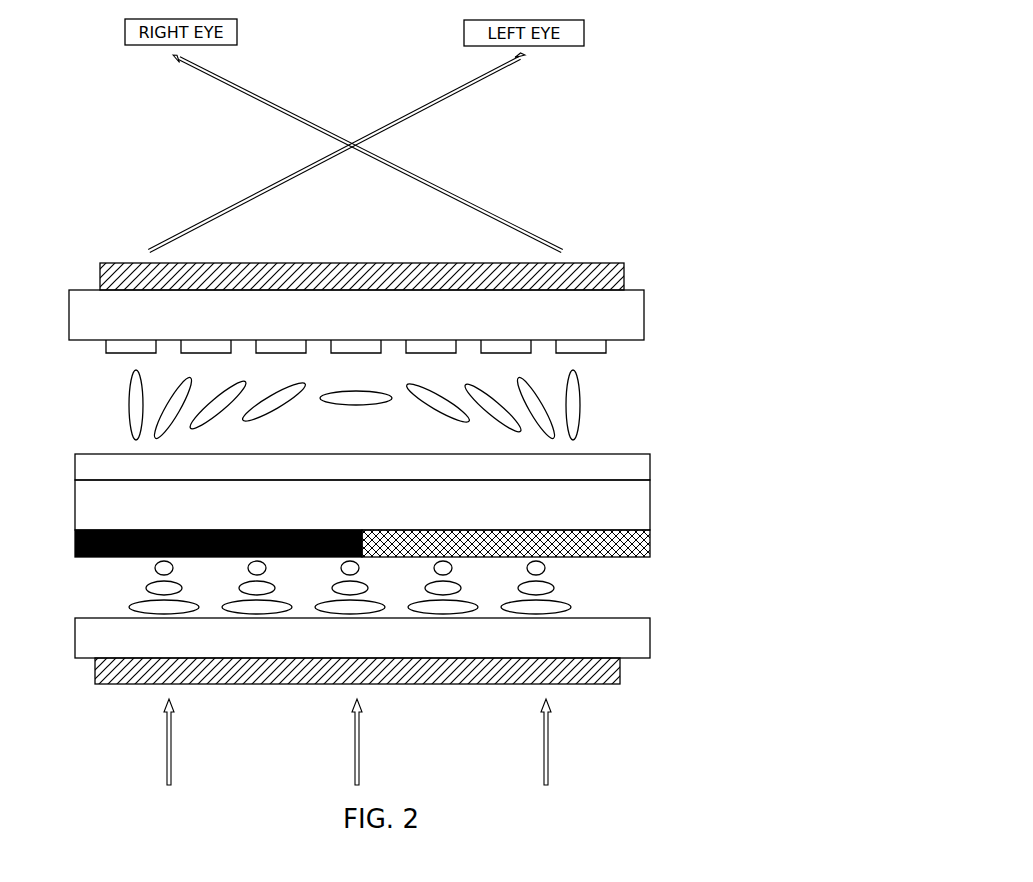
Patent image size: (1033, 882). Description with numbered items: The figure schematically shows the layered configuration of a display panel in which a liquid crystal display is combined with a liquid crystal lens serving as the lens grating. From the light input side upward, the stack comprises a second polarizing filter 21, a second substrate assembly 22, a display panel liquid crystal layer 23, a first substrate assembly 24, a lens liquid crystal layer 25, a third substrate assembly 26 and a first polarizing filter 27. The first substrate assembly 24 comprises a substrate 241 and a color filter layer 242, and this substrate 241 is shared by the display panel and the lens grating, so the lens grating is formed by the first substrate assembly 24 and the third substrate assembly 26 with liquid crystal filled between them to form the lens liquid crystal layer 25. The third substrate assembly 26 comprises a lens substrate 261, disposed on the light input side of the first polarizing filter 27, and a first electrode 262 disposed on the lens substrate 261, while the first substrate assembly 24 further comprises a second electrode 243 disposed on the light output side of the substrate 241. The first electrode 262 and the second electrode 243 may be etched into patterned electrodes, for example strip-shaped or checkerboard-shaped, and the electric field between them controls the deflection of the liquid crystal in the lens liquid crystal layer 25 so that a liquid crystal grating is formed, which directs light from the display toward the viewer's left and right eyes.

The second polarizing filter 21 is at (600, 671).
The second substrate assembly 22 is at (600, 637).
The display panel liquid crystal layer 23 is at (61, 560).
The first substrate assembly 24 is at (383, 505).
The substrate 241 is at (600, 505).
The color filter layer 242 is at (600, 543).
The second electrode 243 is at (600, 467).
The lens liquid crystal layer 25 is at (64, 367).
The third substrate assembly 26 is at (383, 324).
The lens substrate 261 is at (600, 315).
The first electrode 262 is at (600, 347).
The first polarizing filter 27 is at (624, 275).